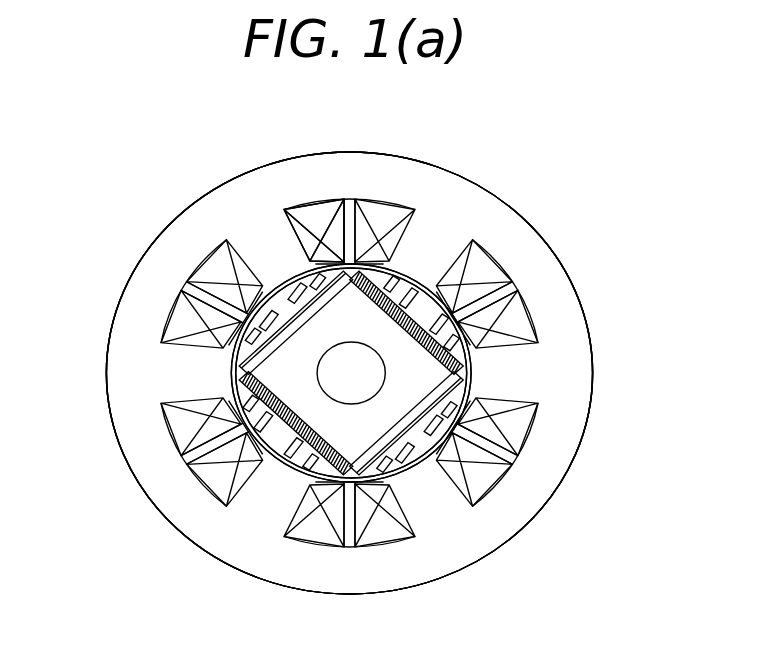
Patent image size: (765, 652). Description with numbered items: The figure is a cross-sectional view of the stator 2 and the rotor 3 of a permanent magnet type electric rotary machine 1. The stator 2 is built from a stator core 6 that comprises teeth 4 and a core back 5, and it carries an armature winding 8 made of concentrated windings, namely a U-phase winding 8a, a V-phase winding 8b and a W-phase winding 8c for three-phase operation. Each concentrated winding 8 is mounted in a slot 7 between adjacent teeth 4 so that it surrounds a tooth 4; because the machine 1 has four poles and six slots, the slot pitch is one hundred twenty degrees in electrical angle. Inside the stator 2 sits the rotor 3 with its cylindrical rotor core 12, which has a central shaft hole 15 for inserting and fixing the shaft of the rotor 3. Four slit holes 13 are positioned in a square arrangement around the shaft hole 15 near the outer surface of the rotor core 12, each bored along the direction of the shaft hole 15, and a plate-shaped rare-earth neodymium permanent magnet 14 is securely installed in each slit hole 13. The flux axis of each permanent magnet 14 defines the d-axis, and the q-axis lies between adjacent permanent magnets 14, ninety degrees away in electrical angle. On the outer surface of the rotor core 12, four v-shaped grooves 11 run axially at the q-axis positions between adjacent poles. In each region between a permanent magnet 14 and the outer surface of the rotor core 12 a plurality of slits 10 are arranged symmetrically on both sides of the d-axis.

The permanent magnet type electric rotary machine 1 is at (513, 210).
The stator 2 is at (147, 252).
The rotor 3 is at (475, 362).
The teeth 4 is at (187, 382).
The core back 5 is at (180, 232).
The stator core 6 is at (165, 296).
The slot 7 is at (356, 200).
The armature winding 8 is at (313, 210).
The U-phase winding 8a is at (180, 232).
The V-phase winding 8b is at (398, 213).
The W-phase winding 8c is at (180, 326).
The slits 10 is at (417, 277).
The grooves 11 is at (465, 378).
The rotor core 12 is at (275, 300).
The slit holes 13 is at (292, 458).
The permanent magnets 14 is at (325, 490).
The shaft hole 15 is at (362, 390).